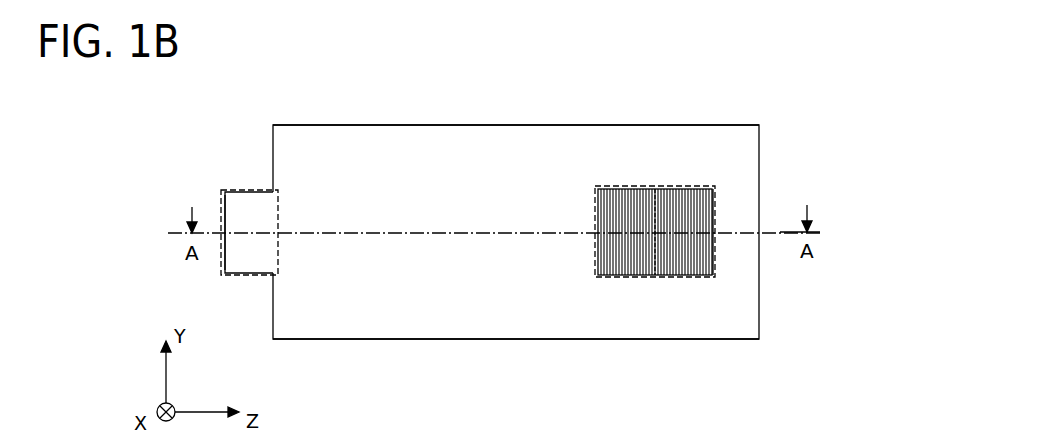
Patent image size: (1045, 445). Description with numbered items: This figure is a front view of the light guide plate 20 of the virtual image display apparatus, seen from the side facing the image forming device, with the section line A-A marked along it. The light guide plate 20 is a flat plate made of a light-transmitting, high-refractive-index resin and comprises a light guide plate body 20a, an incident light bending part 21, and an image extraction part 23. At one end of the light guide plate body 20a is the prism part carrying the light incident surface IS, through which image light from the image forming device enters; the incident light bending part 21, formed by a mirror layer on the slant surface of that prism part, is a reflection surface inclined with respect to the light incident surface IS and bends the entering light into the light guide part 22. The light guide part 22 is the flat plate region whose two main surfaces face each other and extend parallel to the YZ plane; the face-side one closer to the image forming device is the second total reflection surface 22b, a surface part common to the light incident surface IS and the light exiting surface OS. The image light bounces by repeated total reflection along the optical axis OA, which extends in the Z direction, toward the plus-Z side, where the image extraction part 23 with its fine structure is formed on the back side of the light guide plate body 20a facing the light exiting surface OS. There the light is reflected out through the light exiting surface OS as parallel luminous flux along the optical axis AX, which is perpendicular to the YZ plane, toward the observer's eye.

The light guide plate 20 is at (349, 75).
The light guide plate body 20a is at (432, 124).
The light guide part 22 is at (491, 132).
The second total reflection surface 22b is at (363, 308).
The incident light bending part 21 is at (223, 191).
The image extraction part 23 is at (651, 186).
The light incident surface IS is at (248, 212).
The light exiting surface OS is at (713, 277).
The optical axis OA is at (446, 236).
The optical axis AX is at (659, 280).